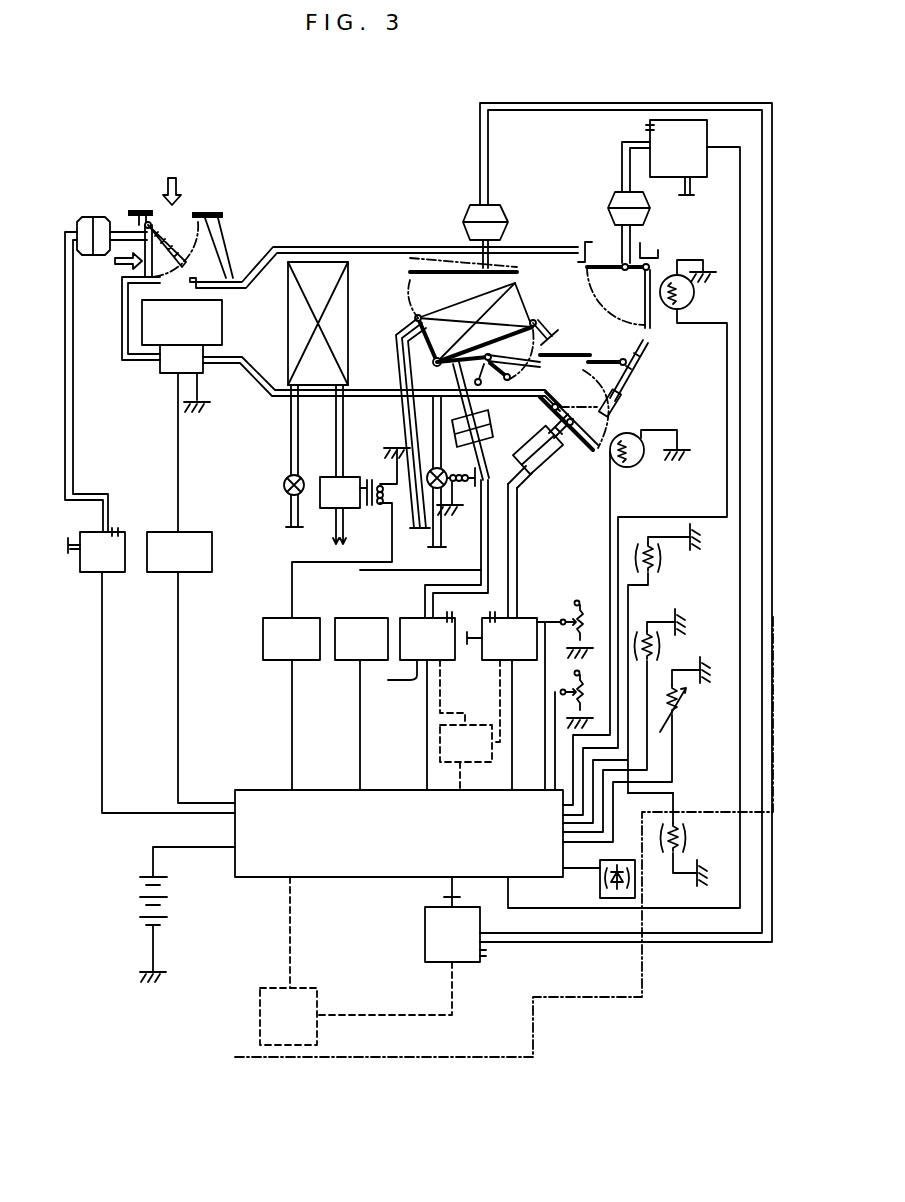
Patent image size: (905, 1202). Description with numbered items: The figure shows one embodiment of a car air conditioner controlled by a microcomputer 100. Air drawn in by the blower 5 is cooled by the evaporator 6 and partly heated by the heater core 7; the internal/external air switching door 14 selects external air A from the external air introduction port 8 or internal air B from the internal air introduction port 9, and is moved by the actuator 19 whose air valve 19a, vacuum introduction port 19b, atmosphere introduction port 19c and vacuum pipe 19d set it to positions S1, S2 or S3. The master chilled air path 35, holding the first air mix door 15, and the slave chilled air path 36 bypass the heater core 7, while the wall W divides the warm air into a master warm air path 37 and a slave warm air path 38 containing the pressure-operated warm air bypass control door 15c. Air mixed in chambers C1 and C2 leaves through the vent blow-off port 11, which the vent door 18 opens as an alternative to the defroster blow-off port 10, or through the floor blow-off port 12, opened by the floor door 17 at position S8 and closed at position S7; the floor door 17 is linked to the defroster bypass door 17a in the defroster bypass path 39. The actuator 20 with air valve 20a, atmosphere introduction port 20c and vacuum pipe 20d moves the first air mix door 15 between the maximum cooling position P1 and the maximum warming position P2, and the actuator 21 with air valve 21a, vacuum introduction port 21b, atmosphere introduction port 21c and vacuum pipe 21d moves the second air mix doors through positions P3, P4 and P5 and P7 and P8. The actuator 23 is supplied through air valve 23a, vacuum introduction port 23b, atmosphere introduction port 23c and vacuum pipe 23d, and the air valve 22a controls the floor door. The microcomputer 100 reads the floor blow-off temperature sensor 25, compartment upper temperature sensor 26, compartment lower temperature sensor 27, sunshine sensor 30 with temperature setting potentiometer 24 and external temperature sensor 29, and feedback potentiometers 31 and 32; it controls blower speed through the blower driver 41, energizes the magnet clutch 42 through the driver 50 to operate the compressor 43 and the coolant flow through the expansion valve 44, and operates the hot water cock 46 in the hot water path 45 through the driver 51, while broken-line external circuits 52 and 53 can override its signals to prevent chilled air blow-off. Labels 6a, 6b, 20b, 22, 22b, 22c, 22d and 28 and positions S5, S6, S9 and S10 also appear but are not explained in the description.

The blower 5 is at (175, 360).
The evaporator 6 is at (286, 325).
The pivot of air mix door 6a is at (460, 345).
The air mix door plate 6b is at (508, 345).
The heater core 7 is at (408, 322).
The external air introduction port 8 is at (183, 212).
The internal air introduction port 9 is at (143, 250).
The defroster blow-off port 10 is at (614, 262).
The vent blow-off port 11 is at (655, 325).
The floor blow-off port 12 is at (609, 425).
The internal/external air switching door 14 is at (150, 220).
The first air mix door 15 is at (440, 262).
The warm air bypass control door 15c is at (545, 330).
The floor door 17 is at (569, 434).
The defroster bypass door 17a is at (624, 374).
The vent door 18 is at (622, 270).
The actuator 19 is at (95, 215).
The air valve 19a is at (115, 572).
The vacuum introduction port 19b is at (68, 553).
The atmosphere introduction port 19c is at (114, 528).
The vacuum pipe 19d is at (70, 420).
The actuator 20 is at (502, 210).
The air valve 20a is at (417, 955).
The drive circuit terminal 20b is at (452, 896).
The atmosphere introduction port 20c is at (490, 956).
The vacuum pipe 20d is at (548, 103).
The actuator 21 is at (452, 472).
The air valve 21a is at (430, 665).
The vacuum introduction port 21b is at (405, 680).
The atmosphere introduction port 21c is at (452, 606).
The vacuum pipe 21d is at (425, 588).
The mode door actuator 22 is at (540, 470).
The air valve 22a is at (535, 632).
The drive circuit connector 22b is at (472, 650).
The drive circuit terminal 22c is at (492, 612).
The actuator lead wires 22d is at (519, 538).
The actuator 23 is at (648, 224).
The air valve 23a is at (700, 103).
The vacuum introduction port 23b is at (692, 194).
The atmosphere introduction port 23c is at (646, 130).
The vacuum pipe 23d is at (622, 168).
The temperature setting potentiometer 24 is at (696, 292).
The floor blow-off temperature sensor 25 is at (640, 465).
The compartment upper temperature sensor 26 is at (662, 574).
The compartment lower temperature sensor 27 is at (665, 630).
The temperature setting variable resistor 28 is at (680, 712).
The external temperature sensor 29 is at (689, 840).
The sunshine sensor 30 is at (600, 891).
The feedback potentiometer 31 is at (598, 622).
The feedback potentiometer 32 is at (598, 692).
The master chilled air path 35 is at (510, 270).
The slave chilled air path 36 is at (443, 385).
The master warm air path 37 is at (520, 370).
The slave warm air path 38 is at (552, 340).
The defroster bypass path 39 is at (638, 346).
The blower driver 41 is at (200, 532).
The magnet clutch 42 is at (372, 508).
The compressor 43 is at (325, 508).
The expansion valve 44 is at (284, 482).
The hot water path 45 is at (402, 380).
The hot water cock 46 is at (462, 490).
The driver 50 is at (263, 640).
The driver 51 is at (347, 660).
The external circuit 52 is at (470, 762).
The external circuit 53 is at (320, 1000).
The microcomputer 100 is at (322, 877).
The external air A is at (172, 176).
The internal air B is at (121, 267).
The wall W is at (576, 350).
The chamber C1 is at (579, 297).
The lower chamber C2 is at (578, 392).
The maximum cooling position P1 is at (425, 301).
The maximum warming position P2 is at (416, 242).
The full-close position P3 is at (479, 369).
The middle-open position P4 is at (488, 383).
The full-open position P5 is at (482, 425).
The full-close position P7 is at (524, 350).
The full-open position P8 is at (505, 379).
The internal air introduction position S1 is at (184, 238).
The semi-internal/external air introduction position S2 is at (195, 271).
The external air introduction position S3 is at (165, 260).
The door position S5 is at (580, 272).
The door position S6 is at (627, 324).
The floor port closed position S7 is at (592, 424).
The floor port opened position S8 is at (599, 466).
The door position S9 is at (627, 405).
The door position S10 is at (590, 403).